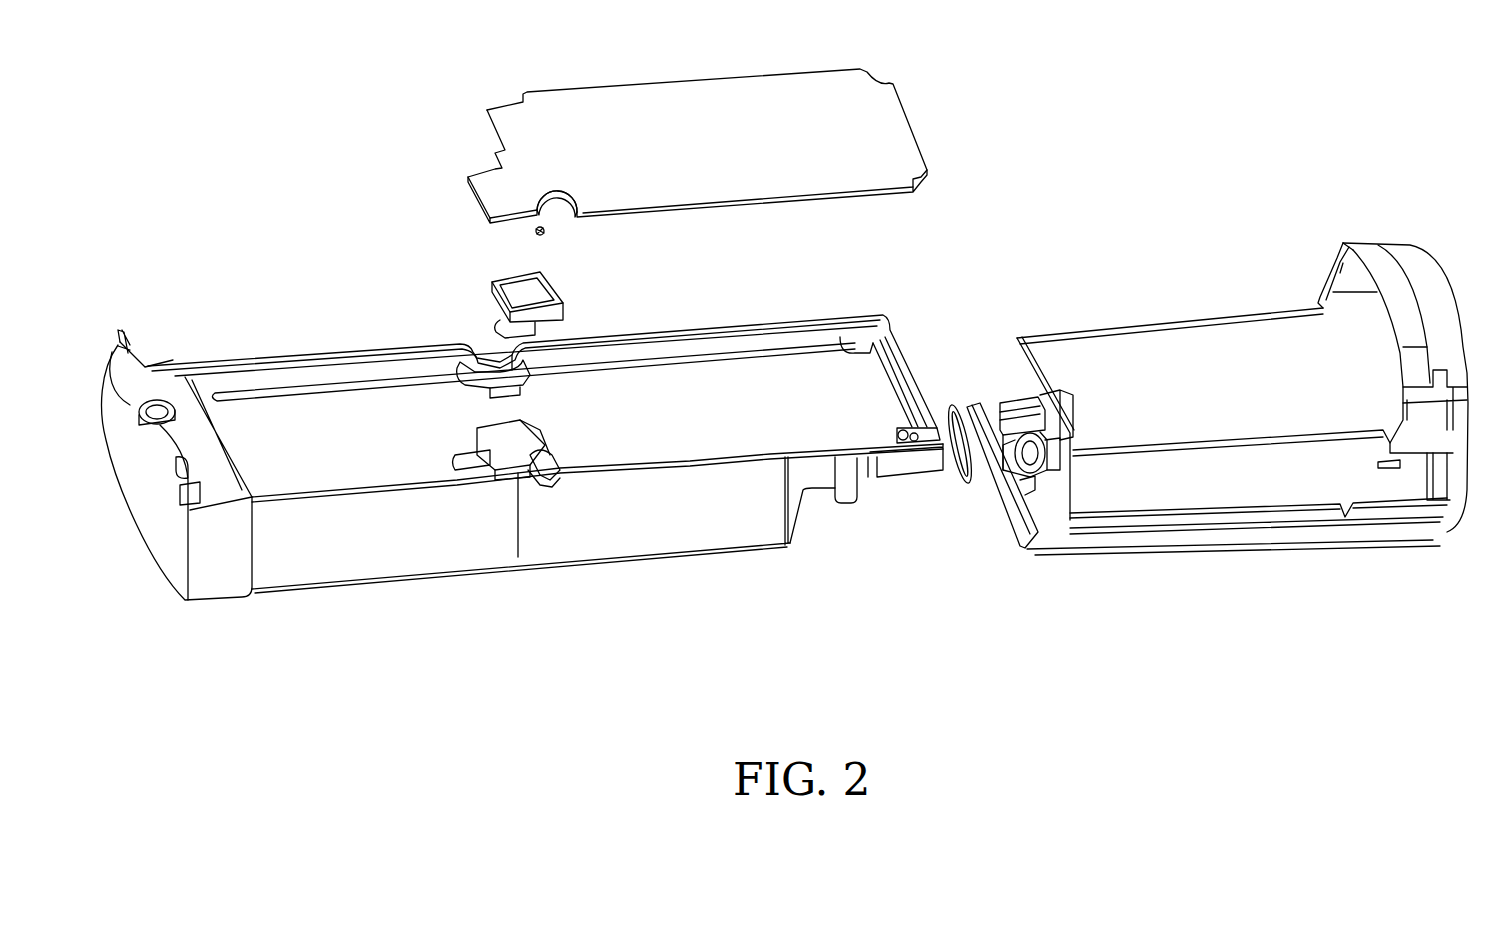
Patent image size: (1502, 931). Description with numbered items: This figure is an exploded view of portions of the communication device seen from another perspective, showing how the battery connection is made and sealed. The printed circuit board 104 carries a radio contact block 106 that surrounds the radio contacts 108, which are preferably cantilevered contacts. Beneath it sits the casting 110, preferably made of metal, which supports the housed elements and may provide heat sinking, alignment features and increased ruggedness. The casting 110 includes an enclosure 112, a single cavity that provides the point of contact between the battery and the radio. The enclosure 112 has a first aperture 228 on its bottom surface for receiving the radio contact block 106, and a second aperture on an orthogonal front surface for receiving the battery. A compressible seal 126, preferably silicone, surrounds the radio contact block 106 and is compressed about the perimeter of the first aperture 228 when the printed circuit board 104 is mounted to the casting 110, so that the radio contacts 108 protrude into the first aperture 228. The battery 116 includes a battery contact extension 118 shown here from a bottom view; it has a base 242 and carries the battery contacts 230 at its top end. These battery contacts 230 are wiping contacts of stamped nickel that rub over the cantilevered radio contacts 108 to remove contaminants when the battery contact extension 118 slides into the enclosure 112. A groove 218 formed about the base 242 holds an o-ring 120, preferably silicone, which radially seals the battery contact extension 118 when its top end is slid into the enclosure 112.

The printed circuit board 104 is at (800, 77).
The radio contact block 106 is at (551, 214).
The radio contacts 108 is at (541, 236).
The casting 110 is at (520, 387).
The enclosure 112 is at (490, 467).
The battery 116 is at (1195, 330).
The battery contact extension 118 is at (947, 482).
The o-ring 120 is at (955, 403).
The compressible seal 126 is at (494, 273).
The groove 218 is at (1067, 460).
The first aperture 228 is at (540, 460).
The battery contacts 230 is at (1010, 403).
The base 242 is at (1067, 463).